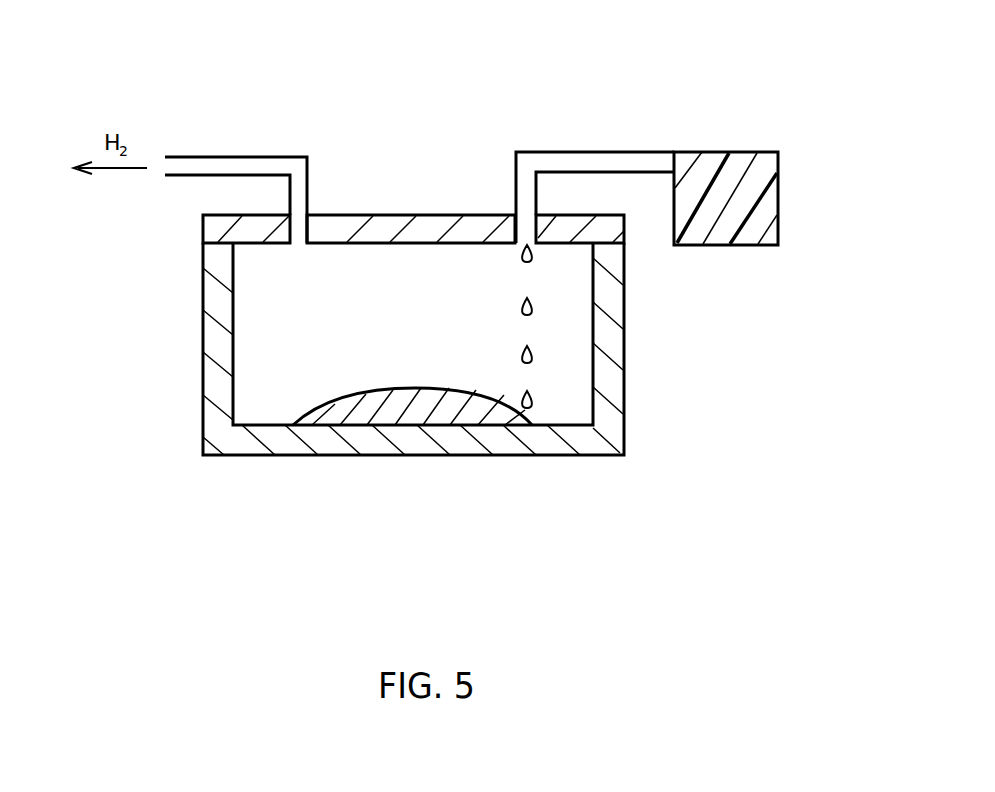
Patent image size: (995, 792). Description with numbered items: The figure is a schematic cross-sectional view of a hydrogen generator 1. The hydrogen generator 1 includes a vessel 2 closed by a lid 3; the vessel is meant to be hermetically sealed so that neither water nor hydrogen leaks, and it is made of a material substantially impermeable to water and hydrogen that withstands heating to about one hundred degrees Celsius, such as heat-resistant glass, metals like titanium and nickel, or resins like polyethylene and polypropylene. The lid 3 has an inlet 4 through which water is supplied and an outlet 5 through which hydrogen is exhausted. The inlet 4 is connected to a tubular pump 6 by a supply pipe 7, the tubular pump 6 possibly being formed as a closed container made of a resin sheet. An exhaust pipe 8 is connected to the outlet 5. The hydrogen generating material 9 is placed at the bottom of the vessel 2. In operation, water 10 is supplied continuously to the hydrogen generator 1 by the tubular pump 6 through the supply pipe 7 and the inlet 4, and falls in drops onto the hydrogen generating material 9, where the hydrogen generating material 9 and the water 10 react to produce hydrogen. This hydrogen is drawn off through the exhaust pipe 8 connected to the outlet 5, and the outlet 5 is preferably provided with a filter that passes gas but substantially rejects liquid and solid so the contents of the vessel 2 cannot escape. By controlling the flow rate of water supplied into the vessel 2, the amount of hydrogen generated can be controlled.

The hydrogen generator 1 is at (228, 477).
The vessel 2 is at (585, 433).
The lid 3 is at (398, 229).
The inlet 4 is at (518, 229).
The outlet 5 is at (300, 225).
The tubular pump 6 is at (762, 203).
The supply pipe 7 is at (596, 152).
The exhaust pipe 8 is at (236, 157).
The hydrogen generating material 9 is at (412, 413).
The water 10 is at (534, 357).